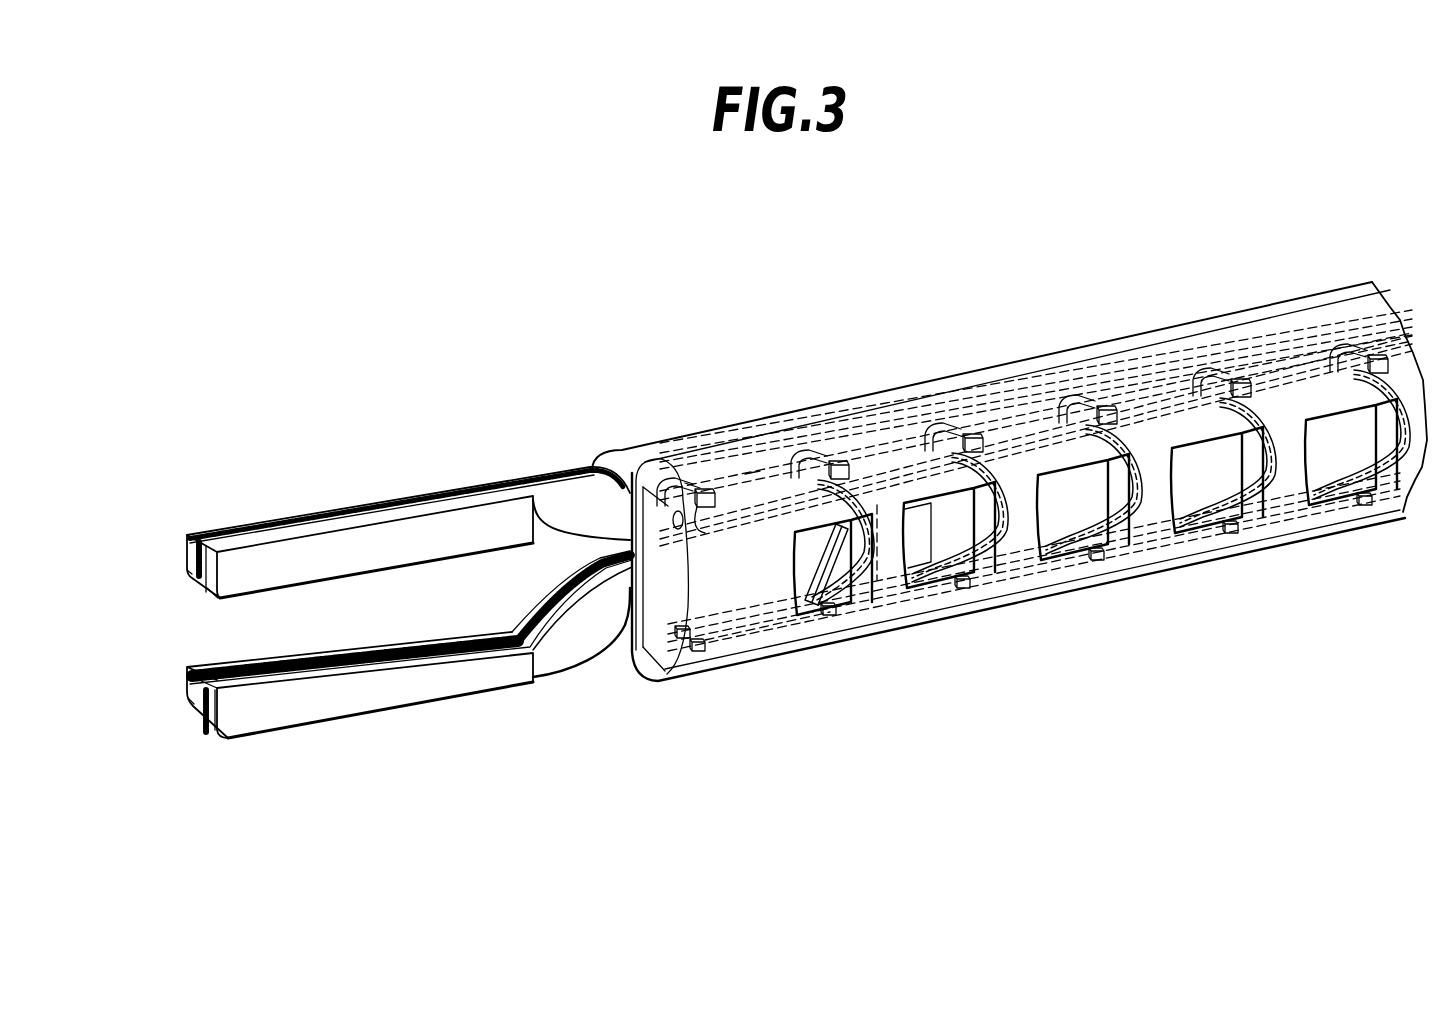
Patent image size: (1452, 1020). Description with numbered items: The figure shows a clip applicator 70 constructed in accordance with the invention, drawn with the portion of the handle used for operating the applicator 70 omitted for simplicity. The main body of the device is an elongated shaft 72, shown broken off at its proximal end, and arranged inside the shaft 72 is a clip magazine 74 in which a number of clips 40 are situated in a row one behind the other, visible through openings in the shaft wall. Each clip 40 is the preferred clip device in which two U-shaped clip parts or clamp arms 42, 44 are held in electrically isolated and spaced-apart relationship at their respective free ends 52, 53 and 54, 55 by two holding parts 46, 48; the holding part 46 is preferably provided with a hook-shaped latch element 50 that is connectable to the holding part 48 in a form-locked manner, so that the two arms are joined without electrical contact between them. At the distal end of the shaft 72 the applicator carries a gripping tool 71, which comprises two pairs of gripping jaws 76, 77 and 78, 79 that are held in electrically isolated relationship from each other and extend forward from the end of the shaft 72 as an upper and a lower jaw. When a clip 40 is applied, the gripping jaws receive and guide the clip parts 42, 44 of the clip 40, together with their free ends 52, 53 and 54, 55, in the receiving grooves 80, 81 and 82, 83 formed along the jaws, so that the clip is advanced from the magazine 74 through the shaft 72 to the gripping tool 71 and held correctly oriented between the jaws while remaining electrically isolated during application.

The clip applicator 70 is at (1206, 293).
The gripping tool 71 is at (399, 470).
The shaft 72 is at (1300, 285).
The clip magazine 74 is at (946, 526).
The gripping jaw 76 is at (318, 548).
The gripping jaw 77 is at (243, 525).
The gripping jaw 78 is at (258, 707).
The gripping jaw 79 is at (193, 695).
The receiving groove 80 is at (207, 588).
The receiving groove 81 is at (193, 573).
The receiving groove 82 is at (300, 676).
The receiving groove 83 is at (215, 680).
The clip device 40 is at (1122, 440).
The clamp arm 42 is at (783, 478).
The clamp arm 44 is at (768, 465).
The holding part 46 is at (688, 478).
The holding part 48 is at (715, 655).
The latch element 50 is at (680, 500).
The free end 52 is at (770, 630).
The free end 53 is at (752, 470).
The free end 54 is at (740, 647).
The free end 55 is at (724, 466).